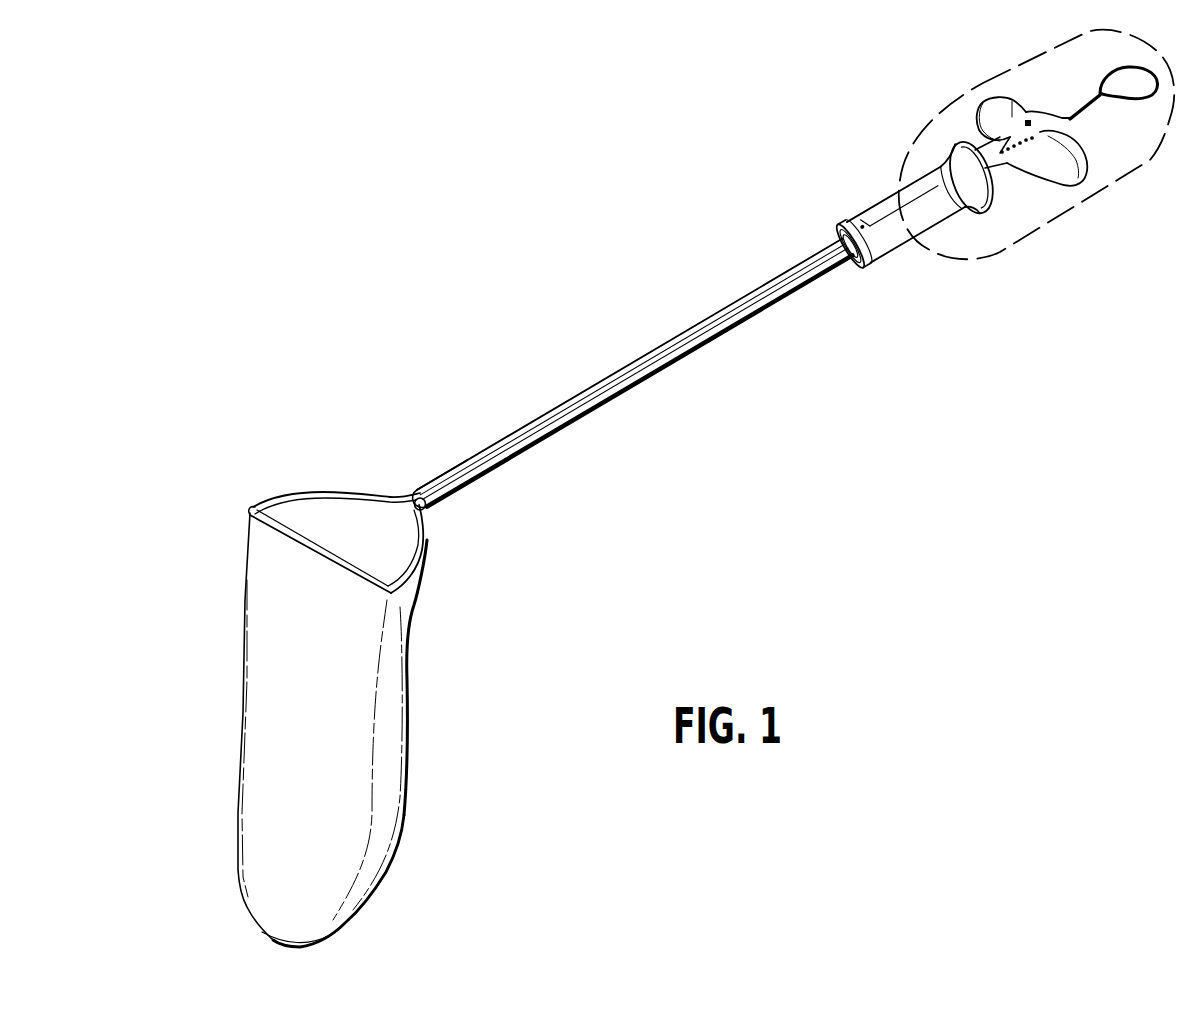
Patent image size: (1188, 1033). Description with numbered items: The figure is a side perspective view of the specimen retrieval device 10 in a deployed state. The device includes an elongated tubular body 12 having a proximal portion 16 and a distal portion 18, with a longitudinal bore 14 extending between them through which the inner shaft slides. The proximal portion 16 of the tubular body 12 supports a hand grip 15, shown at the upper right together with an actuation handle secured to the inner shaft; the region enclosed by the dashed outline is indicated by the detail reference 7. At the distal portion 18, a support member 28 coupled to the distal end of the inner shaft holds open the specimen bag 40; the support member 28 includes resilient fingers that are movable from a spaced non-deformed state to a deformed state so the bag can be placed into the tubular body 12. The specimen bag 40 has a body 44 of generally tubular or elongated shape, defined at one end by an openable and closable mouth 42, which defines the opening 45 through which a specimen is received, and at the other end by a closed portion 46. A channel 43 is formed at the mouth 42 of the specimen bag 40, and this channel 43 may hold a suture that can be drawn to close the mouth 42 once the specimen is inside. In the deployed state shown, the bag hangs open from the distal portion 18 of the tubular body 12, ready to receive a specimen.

The handle assembly detail 7 is at (1075, 210).
The specimen retrieval device 10 is at (758, 338).
The tubular body 12 is at (613, 383).
The longitudinal bore 14 is at (426, 506).
The hand grip 15 is at (885, 212).
The proximal portion 16 is at (825, 255).
The distal portion 18 is at (432, 486).
The support member 28 is at (394, 492).
The specimen bag 40 is at (436, 601).
The mouth 42 is at (320, 557).
The channel 43 is at (282, 528).
The body 44 is at (270, 720).
The opening 45 is at (317, 520).
The closed portion 46 is at (313, 945).